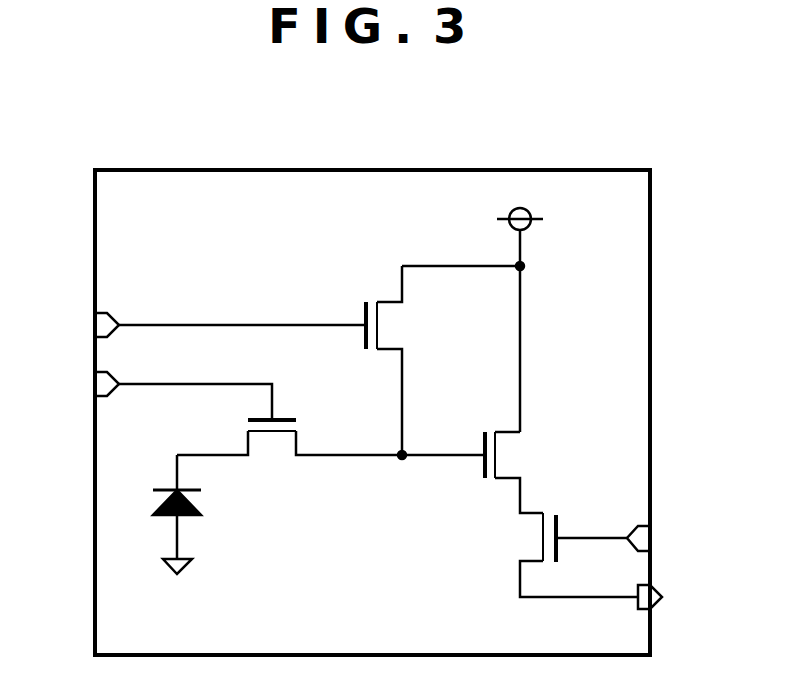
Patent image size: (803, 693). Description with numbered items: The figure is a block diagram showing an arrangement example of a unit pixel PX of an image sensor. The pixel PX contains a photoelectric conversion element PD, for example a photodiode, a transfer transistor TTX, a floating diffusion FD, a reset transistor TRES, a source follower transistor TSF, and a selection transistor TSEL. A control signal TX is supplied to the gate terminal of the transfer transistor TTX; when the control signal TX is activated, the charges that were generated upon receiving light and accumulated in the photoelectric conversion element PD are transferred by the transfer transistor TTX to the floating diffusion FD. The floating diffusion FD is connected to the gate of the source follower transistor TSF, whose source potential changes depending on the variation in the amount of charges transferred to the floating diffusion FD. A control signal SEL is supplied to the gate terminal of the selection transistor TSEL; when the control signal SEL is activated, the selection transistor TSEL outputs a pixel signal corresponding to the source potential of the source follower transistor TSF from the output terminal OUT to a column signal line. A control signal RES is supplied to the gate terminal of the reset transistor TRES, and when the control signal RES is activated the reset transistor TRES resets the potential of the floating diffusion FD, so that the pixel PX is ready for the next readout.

The pixel PX is at (156, 170).
The control signal RES is at (195, 325).
The control signal TX is at (157, 393).
The reset transistor TRES is at (414, 360).
The transfer transistor TTX is at (289, 459).
The source follower transistor TSF is at (525, 472).
The selection transistor TSEL is at (549, 555).
The floating diffusion FD is at (402, 460).
The photoelectric conversion element PD is at (187, 514).
The control signal SEL is at (637, 538).
The output terminal OUT is at (684, 597).